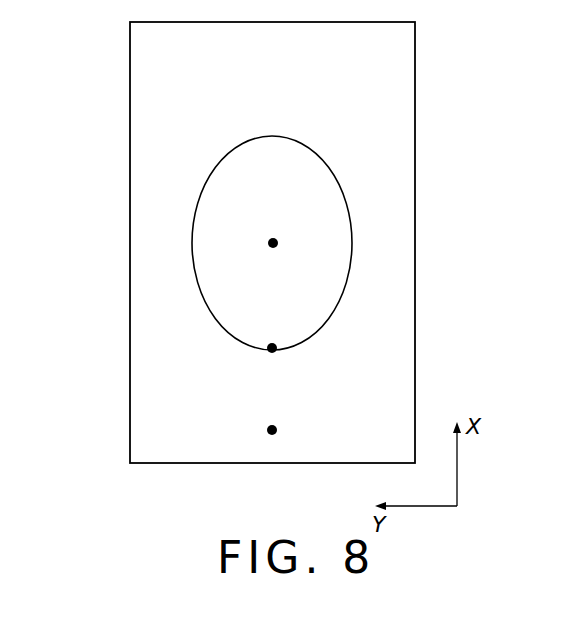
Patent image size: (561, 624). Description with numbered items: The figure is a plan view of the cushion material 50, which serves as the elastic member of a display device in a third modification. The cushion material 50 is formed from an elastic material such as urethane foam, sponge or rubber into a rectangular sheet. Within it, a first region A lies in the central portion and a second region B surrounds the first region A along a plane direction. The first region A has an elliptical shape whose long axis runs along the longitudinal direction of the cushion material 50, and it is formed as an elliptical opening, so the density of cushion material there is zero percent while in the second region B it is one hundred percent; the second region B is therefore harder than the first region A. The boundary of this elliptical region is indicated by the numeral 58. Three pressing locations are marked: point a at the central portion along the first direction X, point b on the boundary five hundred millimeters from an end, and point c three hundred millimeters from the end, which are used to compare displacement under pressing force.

The cushion material 50 is at (116, 223).
The elliptical region boundary 58 is at (351, 228).
The first region A is at (287, 180).
The second region B is at (373, 89).
The point a is at (268, 251).
The point b is at (268, 354).
The point c is at (265, 430).